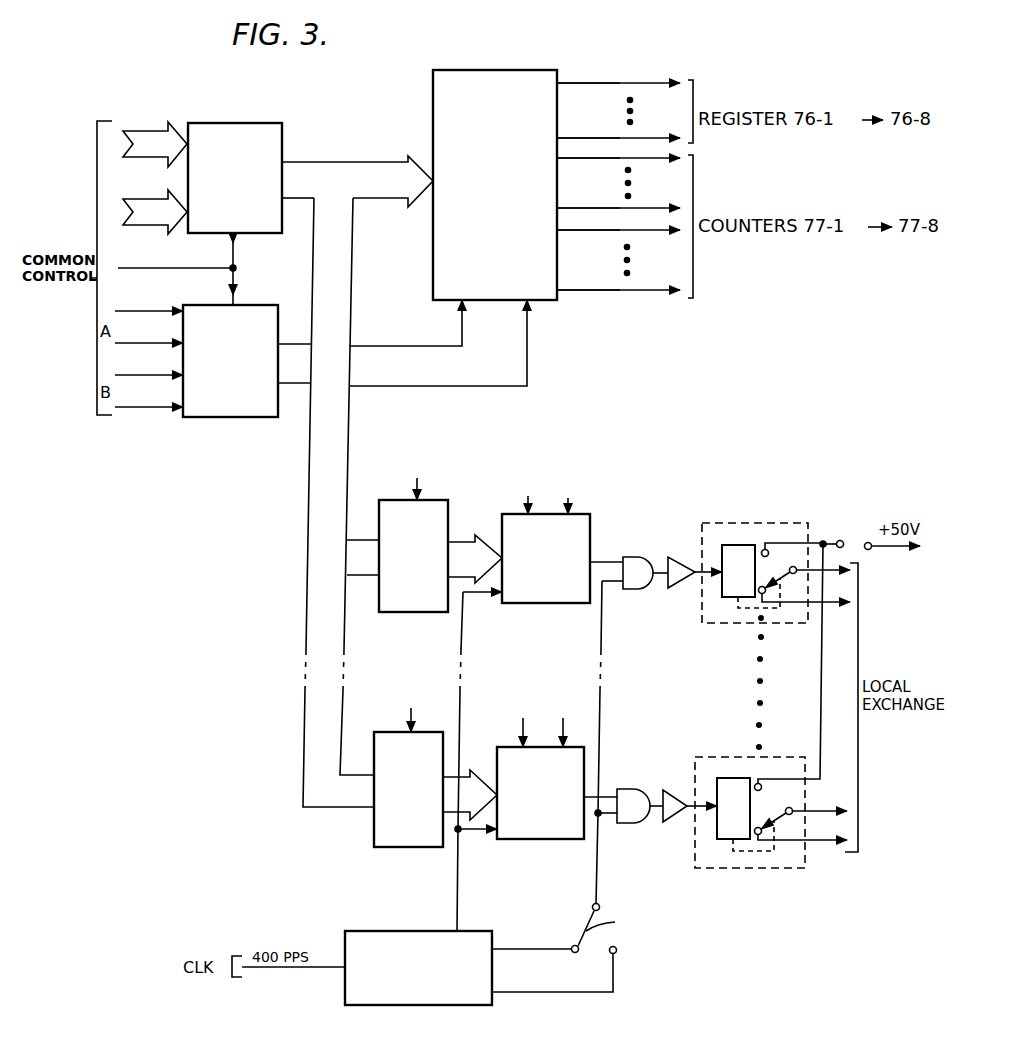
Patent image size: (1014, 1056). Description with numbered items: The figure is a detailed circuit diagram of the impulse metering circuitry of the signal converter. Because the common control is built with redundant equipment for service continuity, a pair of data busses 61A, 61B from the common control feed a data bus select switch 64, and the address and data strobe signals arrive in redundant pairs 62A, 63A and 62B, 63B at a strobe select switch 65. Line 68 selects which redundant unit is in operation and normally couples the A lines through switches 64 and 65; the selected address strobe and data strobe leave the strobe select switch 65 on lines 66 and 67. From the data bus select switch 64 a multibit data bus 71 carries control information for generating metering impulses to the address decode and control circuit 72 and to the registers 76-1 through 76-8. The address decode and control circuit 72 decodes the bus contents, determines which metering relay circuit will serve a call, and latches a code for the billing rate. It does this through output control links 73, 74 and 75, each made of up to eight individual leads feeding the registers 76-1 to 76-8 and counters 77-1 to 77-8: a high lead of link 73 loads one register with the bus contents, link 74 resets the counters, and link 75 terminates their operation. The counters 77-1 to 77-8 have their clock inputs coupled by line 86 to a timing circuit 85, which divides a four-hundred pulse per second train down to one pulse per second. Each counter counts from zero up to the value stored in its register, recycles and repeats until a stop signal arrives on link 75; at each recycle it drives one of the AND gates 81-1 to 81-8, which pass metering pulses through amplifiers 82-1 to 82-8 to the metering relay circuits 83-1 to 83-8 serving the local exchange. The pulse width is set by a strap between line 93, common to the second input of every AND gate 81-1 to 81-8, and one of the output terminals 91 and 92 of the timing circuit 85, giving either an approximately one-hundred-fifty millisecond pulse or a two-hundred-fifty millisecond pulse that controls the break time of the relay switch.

The data bus 61A is at (143, 131).
The data bus 61B is at (148, 199).
The address strobe signal line 62A is at (162, 310).
The address strobe signal line 62B is at (162, 375).
The data strobe signal line 63A is at (162, 342).
The data strobe signal line 63B is at (128, 408).
The data bus select switch 64 is at (283, 143).
The strobe select switch 65 is at (215, 417).
The address strobe line 66 is at (290, 340).
The data strobe line 67 is at (295, 384).
The select line 68 is at (248, 256).
The data bus 71 is at (345, 162).
The address decode and control circuit 72 is at (502, 70).
The output control link 73 is at (603, 118).
The output control link 74 is at (670, 198).
The output control link 75 is at (666, 273).
The register 76-1 is at (386, 612).
The register 76-8 is at (412, 847).
The counter 77-1 is at (591, 534).
The counter 77-8 is at (513, 840).
The AND gate 81-1 is at (641, 553).
The AND gate 81-8 is at (628, 789).
The amplifier 82-1 is at (681, 588).
The amplifier 82-8 is at (672, 790).
The metering relay circuit 83-1 is at (775, 523).
The metering relay circuit 83-8 is at (733, 868).
The timing circuit 85 is at (413, 1006).
The clock line 86 is at (458, 878).
The output terminal 91 is at (616, 953).
The output terminal 92 is at (573, 953).
The common line 93 is at (597, 880).